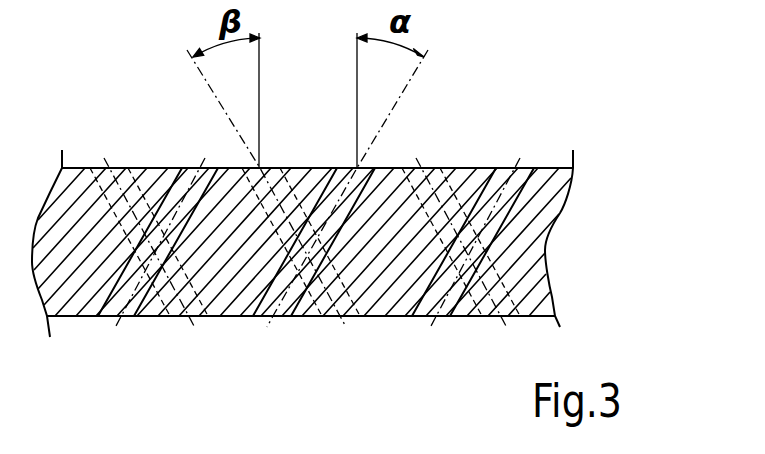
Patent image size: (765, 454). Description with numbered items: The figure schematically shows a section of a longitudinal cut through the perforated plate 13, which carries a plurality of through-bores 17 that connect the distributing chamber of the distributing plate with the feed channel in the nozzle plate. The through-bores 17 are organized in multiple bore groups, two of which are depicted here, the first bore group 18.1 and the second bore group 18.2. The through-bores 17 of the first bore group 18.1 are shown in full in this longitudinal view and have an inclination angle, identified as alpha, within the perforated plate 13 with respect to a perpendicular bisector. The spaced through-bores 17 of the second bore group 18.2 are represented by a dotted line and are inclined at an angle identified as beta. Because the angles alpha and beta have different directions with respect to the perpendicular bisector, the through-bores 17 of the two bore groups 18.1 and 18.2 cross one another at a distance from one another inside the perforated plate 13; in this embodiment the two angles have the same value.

The perforated plate 13 is at (533, 225).
The through-bores 17 is at (502, 178).
The first bore group 18.1 is at (425, 317).
The second bore group 18.2 is at (418, 167).